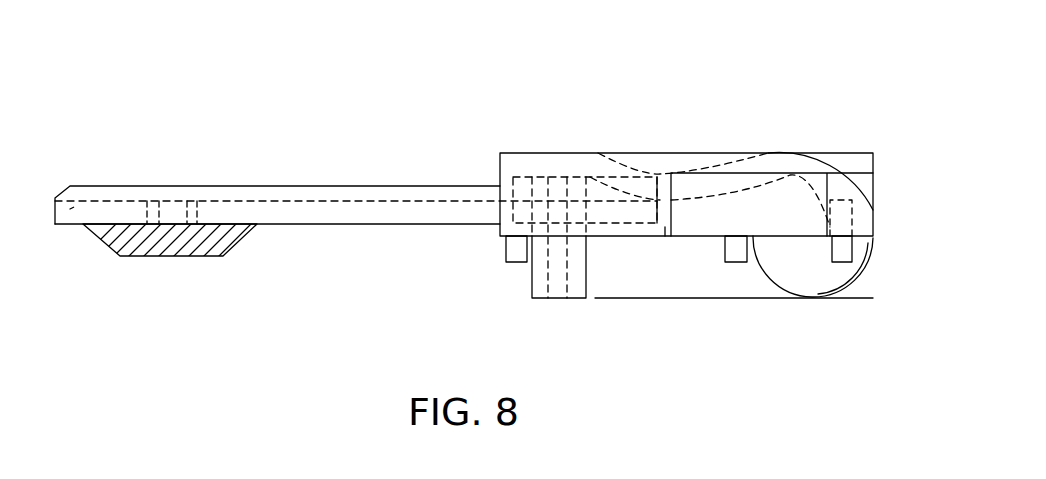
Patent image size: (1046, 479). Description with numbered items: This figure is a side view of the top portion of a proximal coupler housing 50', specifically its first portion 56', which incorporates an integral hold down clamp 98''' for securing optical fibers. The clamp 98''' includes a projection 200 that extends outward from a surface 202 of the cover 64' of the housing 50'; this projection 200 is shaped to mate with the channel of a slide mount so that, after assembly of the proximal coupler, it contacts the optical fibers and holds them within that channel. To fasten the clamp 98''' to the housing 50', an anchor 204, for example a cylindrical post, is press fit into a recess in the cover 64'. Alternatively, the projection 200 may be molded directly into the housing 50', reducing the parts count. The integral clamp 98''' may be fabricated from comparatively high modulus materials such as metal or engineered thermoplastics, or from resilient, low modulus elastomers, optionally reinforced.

The proximal coupler housing 50' is at (700, 153).
The first portion of the proximal coupler housing 56' is at (686, 197).
The cover 64' is at (277, 156).
The integral hold down clamp 98''' is at (356, 211).
The projection 200 is at (132, 257).
The surface 202 is at (369, 224).
The anchor 204 is at (170, 210).